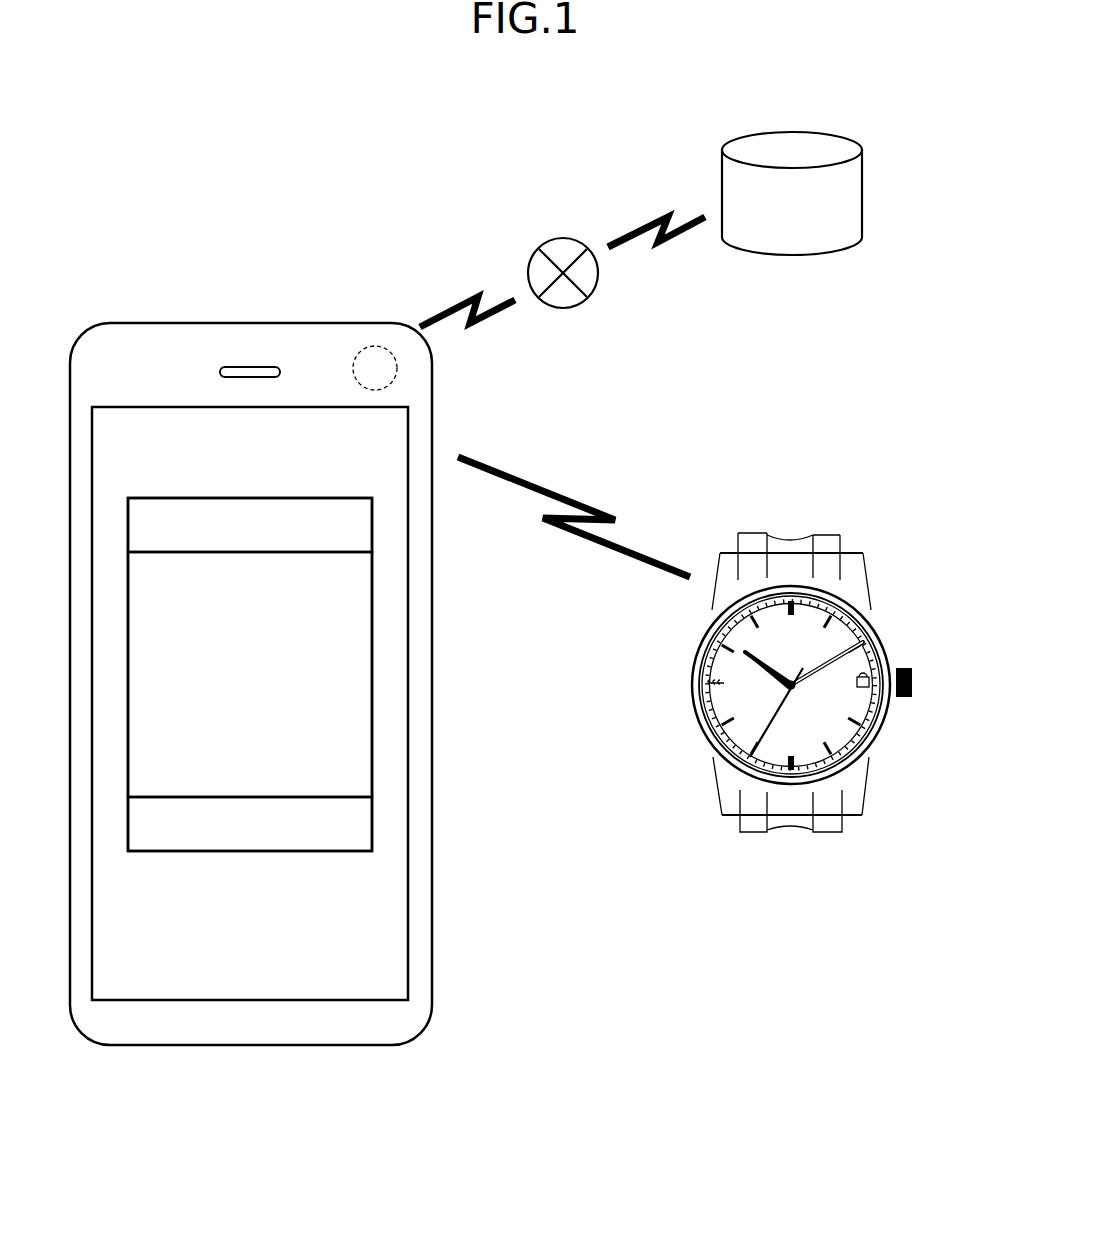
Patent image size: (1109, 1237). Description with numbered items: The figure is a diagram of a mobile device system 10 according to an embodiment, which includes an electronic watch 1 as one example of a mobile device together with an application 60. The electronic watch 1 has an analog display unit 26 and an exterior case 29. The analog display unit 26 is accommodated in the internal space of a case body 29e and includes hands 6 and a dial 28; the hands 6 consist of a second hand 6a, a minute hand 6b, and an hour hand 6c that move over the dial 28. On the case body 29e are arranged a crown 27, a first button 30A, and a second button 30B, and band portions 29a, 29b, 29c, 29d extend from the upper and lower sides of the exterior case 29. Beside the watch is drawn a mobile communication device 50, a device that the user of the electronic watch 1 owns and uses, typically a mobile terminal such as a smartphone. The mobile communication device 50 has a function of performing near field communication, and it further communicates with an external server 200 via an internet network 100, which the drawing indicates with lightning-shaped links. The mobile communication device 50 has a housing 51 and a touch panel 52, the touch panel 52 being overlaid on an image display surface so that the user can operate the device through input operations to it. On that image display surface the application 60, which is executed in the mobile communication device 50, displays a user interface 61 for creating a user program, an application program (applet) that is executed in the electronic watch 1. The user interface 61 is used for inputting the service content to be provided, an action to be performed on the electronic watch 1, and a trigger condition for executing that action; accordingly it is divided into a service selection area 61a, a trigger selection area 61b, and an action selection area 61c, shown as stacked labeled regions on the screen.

The electronic watch 1 is at (878, 562).
The hands 6 is at (795, 652).
The second hand 6a is at (755, 728).
The minute hand 6b is at (800, 673).
The hour hand 6c is at (770, 660).
The mobile device system 10 is at (541, 1068).
The analog display unit 26 is at (702, 740).
The crown 27 is at (913, 680).
The dial 28 is at (715, 708).
The exterior case 29 is at (789, 682).
The band attachment portion 29a is at (730, 562).
The band attachment portion 29b is at (852, 562).
The band attachment portion 29c is at (728, 817).
The band attachment portion 29d is at (853, 817).
The case body 29e is at (690, 683).
The first button 30A is at (905, 643).
The second button 30B is at (907, 735).
The mobile communication device 50 is at (166, 316).
The housing 51 is at (248, 322).
The touch panel 52 is at (383, 595).
The application 60 is at (317, 558).
The user interface 61 is at (288, 498).
The service selection area 61a is at (372, 672).
The trigger selection area 61b is at (372, 522).
The action selection area 61c is at (372, 820).
The internet network 100 is at (563, 238).
The external server 200 is at (793, 133).